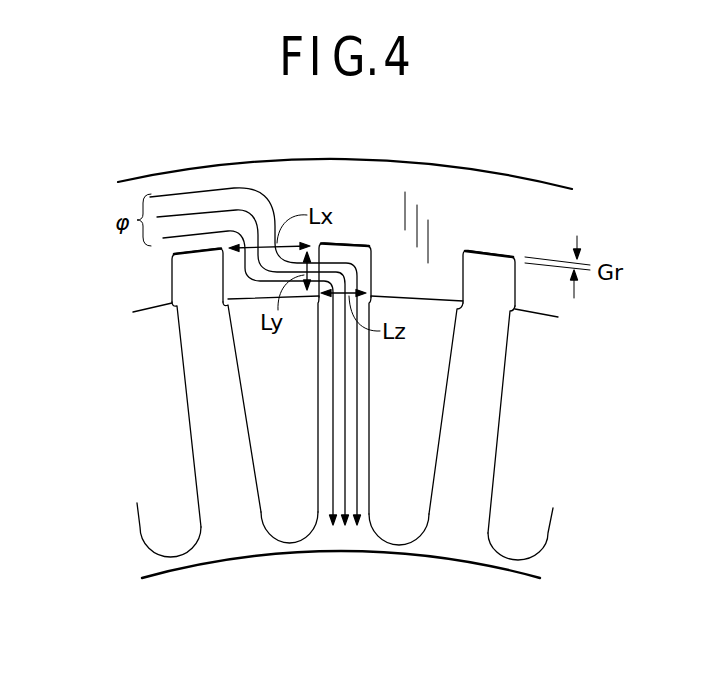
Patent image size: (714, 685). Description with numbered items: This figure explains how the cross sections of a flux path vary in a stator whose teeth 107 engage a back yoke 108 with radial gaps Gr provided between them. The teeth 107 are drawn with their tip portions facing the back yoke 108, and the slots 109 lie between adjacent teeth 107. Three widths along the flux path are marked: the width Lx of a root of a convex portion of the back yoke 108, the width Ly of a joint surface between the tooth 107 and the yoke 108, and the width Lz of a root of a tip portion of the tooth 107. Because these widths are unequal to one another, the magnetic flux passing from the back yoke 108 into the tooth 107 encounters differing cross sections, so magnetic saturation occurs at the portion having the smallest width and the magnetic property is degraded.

The tooth 107 is at (205, 417).
The back yoke 108 is at (473, 196).
The slot 109 is at (173, 537).